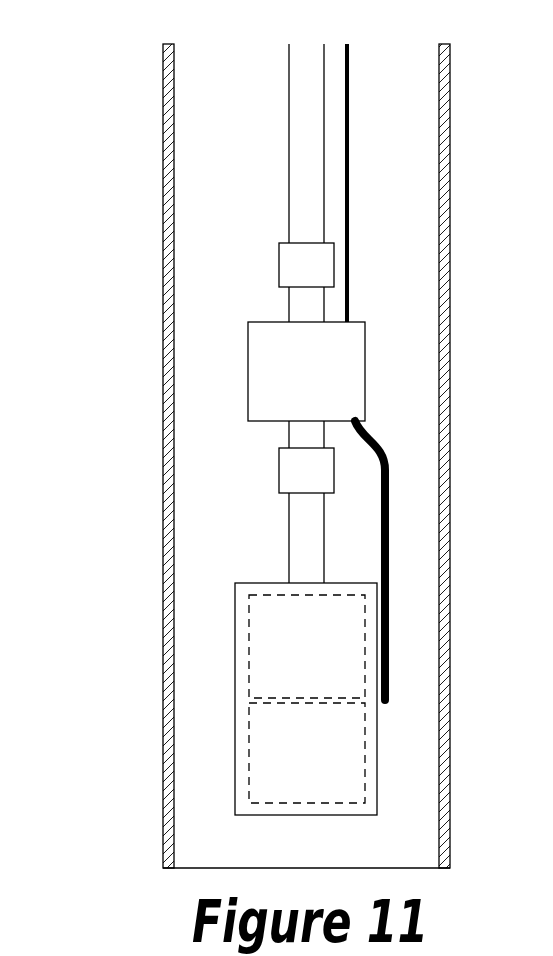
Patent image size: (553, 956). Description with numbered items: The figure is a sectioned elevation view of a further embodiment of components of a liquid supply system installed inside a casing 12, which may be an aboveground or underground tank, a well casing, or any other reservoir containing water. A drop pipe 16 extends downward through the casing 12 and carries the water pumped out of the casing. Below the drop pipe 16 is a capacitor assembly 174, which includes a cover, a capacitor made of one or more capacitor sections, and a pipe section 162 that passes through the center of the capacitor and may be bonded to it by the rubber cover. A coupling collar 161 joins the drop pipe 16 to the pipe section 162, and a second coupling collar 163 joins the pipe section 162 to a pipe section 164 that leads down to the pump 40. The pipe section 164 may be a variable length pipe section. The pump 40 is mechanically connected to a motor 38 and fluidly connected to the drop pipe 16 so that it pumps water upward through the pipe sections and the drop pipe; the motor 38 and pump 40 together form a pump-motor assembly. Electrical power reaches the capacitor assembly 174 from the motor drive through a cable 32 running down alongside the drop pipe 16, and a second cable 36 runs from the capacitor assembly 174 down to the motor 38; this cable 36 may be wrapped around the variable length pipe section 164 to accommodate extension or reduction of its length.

The casing 12 is at (163, 83).
The drop pipe 16 is at (305, 153).
The cable 32 is at (350, 222).
The coupling collar 161 is at (279, 270).
The pipe section 162 is at (289, 307).
The capacitor assembly 174 is at (367, 332).
The coupling collar 163 is at (279, 475).
The pipe section 164 is at (289, 543).
The cable 36 is at (390, 634).
The motor 38 is at (267, 770).
The pump 40 is at (268, 655).